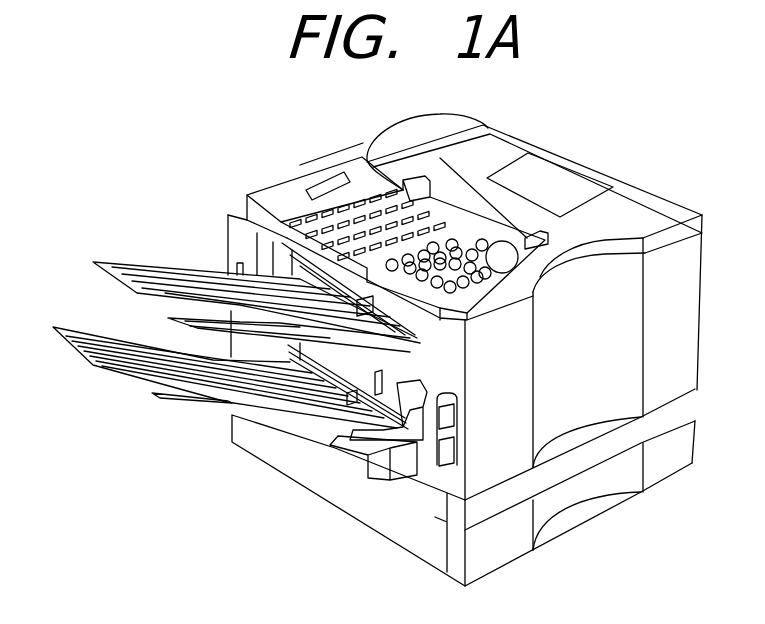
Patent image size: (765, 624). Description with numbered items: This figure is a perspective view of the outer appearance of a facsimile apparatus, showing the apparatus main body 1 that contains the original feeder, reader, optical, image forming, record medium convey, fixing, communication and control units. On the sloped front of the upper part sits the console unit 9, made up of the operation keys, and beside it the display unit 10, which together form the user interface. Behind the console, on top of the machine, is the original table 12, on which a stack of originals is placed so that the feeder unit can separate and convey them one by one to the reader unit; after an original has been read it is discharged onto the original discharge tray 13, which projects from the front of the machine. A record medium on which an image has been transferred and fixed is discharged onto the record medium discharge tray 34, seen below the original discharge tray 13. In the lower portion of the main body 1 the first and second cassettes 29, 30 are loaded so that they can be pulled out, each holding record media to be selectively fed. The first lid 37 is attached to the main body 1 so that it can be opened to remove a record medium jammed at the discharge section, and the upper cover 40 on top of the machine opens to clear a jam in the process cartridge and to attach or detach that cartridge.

The facsimile apparatus main body 1 is at (529, 121).
The console unit 9 is at (468, 238).
The display unit 10 is at (325, 183).
The original table 12 is at (573, 181).
The original discharge tray 13 is at (130, 267).
The first cassette 29 is at (355, 458).
The second cassette 30 is at (382, 512).
The record medium discharge tray 34 is at (168, 397).
The first lid 37 is at (447, 410).
The upper cover 40 is at (633, 207).